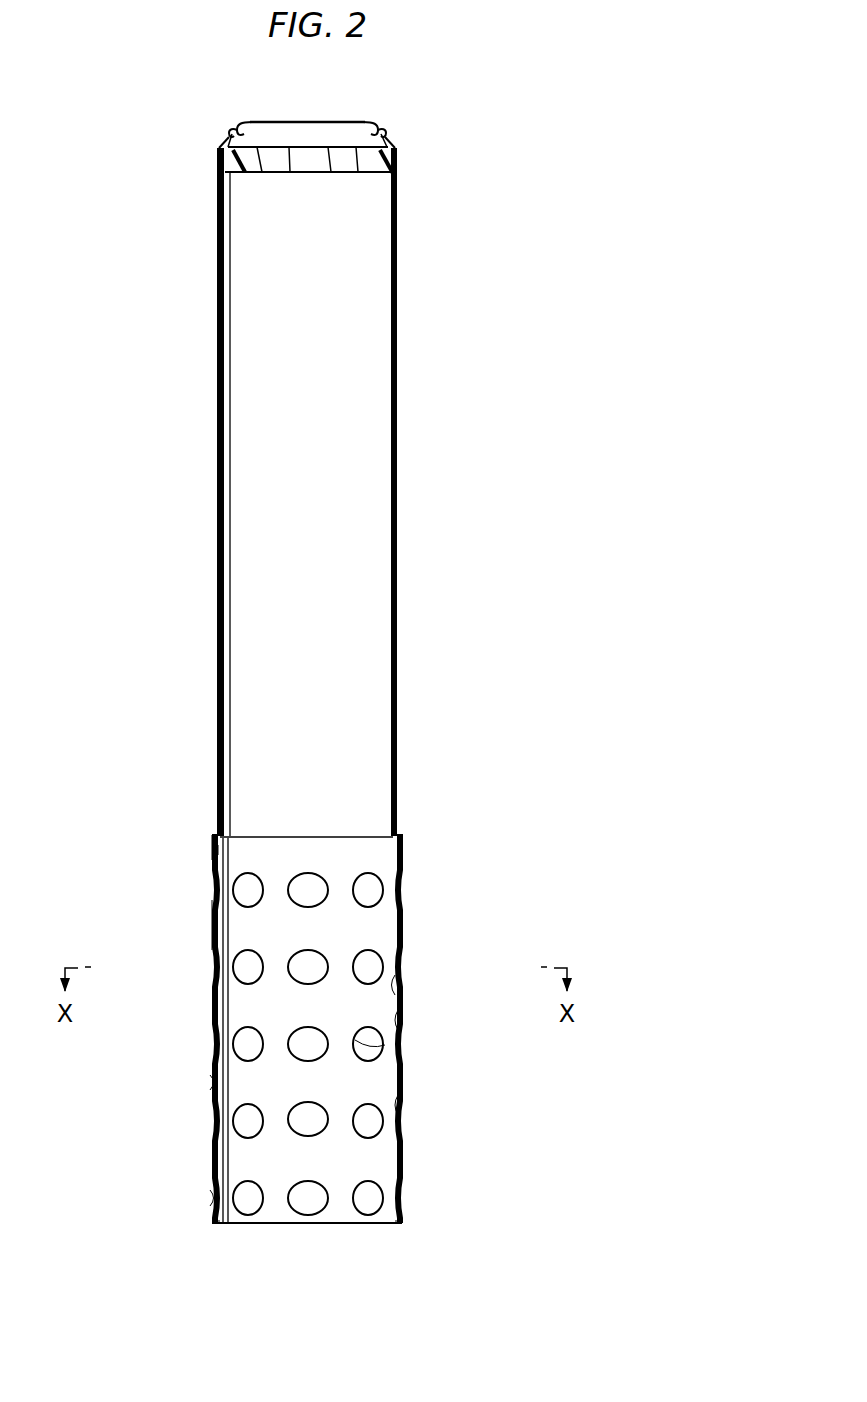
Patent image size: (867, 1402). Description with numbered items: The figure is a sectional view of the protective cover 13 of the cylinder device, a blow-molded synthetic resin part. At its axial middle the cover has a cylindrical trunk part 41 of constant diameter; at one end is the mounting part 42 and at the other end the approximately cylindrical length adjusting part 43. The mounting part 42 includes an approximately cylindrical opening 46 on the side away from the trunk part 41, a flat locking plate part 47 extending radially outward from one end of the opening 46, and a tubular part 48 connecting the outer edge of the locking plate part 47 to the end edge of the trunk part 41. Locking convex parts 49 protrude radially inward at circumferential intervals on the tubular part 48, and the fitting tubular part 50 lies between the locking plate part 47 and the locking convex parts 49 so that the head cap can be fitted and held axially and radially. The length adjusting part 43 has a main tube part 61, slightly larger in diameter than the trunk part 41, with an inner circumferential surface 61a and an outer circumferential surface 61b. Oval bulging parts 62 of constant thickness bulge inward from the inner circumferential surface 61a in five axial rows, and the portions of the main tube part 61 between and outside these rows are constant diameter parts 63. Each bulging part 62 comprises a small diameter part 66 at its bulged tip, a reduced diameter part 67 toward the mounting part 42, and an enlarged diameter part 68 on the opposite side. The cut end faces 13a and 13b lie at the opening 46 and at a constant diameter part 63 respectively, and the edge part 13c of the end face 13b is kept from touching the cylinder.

The protective cover 13 is at (527, 138).
The end face 13a is at (370, 128).
The end face 13b is at (404, 1224).
The edge part 13c is at (217, 1224).
The trunk part 41 is at (398, 398).
The mounting part 42 is at (394, 130).
The length adjusting part 43 is at (404, 868).
The opening 46 is at (252, 125).
The locking plate part 47 is at (238, 128).
The tubular part 48 is at (397, 155).
The locking convex parts 49 is at (236, 150).
The fitting tubular part 50 is at (222, 138).
The main tube part 61 is at (214, 845).
The inner circumferential surface 61a is at (222, 855).
The outer circumferential surface 61b is at (213, 925).
The bulging parts 62 is at (372, 890).
The constant diameter parts 63 is at (392, 985).
The small diameter part 66 is at (398, 1090).
The reduced diameter part 67 is at (396, 1022).
The enlarged diameter part 68 is at (380, 1052).